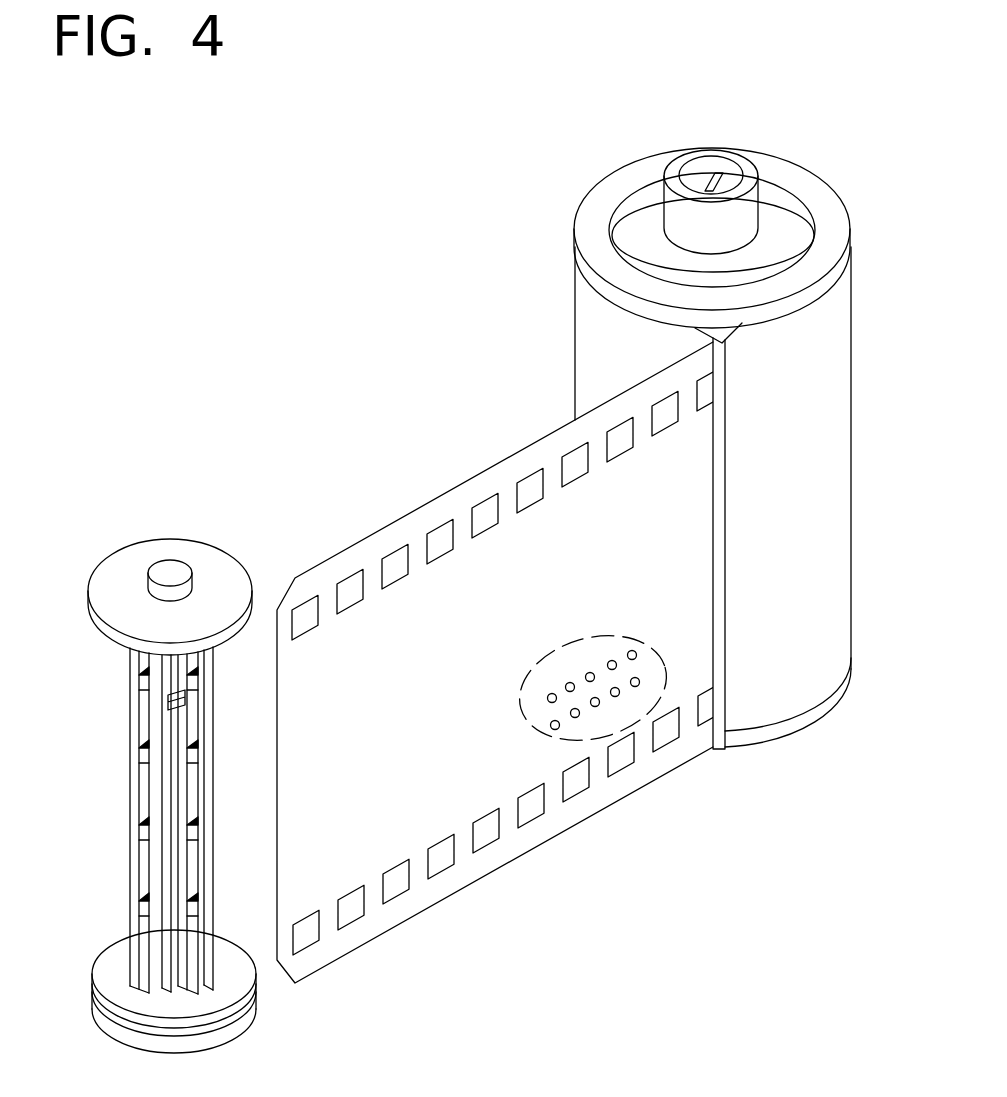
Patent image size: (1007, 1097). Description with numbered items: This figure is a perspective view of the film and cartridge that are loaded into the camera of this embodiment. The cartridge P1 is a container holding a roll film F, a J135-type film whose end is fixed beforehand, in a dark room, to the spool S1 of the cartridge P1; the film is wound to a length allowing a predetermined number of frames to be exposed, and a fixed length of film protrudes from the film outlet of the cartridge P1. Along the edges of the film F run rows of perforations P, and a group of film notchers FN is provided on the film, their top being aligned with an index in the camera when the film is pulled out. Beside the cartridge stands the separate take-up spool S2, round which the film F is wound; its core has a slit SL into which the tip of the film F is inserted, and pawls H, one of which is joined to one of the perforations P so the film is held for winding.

The cartridge P1 is at (832, 355).
The spool of the cartridge S1 is at (737, 220).
The film F is at (392, 647).
The perforations P is at (480, 517).
The film notchers FN is at (558, 742).
The spool S2 is at (165, 760).
The slit SL is at (170, 869).
The pawl H is at (170, 698).